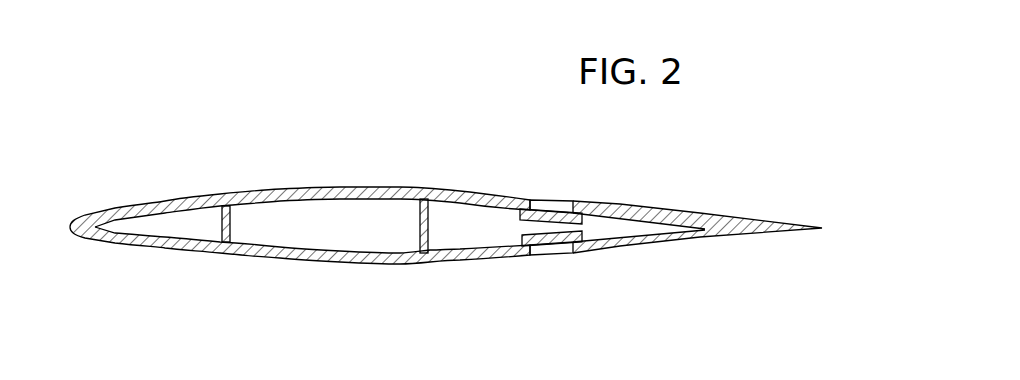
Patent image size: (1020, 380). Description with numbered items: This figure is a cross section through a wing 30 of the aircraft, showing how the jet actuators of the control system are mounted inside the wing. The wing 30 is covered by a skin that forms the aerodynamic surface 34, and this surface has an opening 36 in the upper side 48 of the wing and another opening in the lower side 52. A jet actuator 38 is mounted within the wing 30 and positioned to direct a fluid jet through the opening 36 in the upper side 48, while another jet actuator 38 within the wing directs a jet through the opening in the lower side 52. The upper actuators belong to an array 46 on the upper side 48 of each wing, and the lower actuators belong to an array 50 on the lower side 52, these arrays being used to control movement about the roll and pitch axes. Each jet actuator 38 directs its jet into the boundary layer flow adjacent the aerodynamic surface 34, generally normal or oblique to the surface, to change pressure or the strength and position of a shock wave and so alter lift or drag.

The wing 30 is at (135, 203).
The aerodynamic surface 34 is at (348, 188).
The opening 36 is at (556, 207).
The jet actuator 38 is at (633, 204).
The array of jet actuators 46 is at (510, 203).
The upper side 48 is at (279, 189).
The array of jet actuators 50 is at (500, 239).
The lower side 52 is at (281, 264).